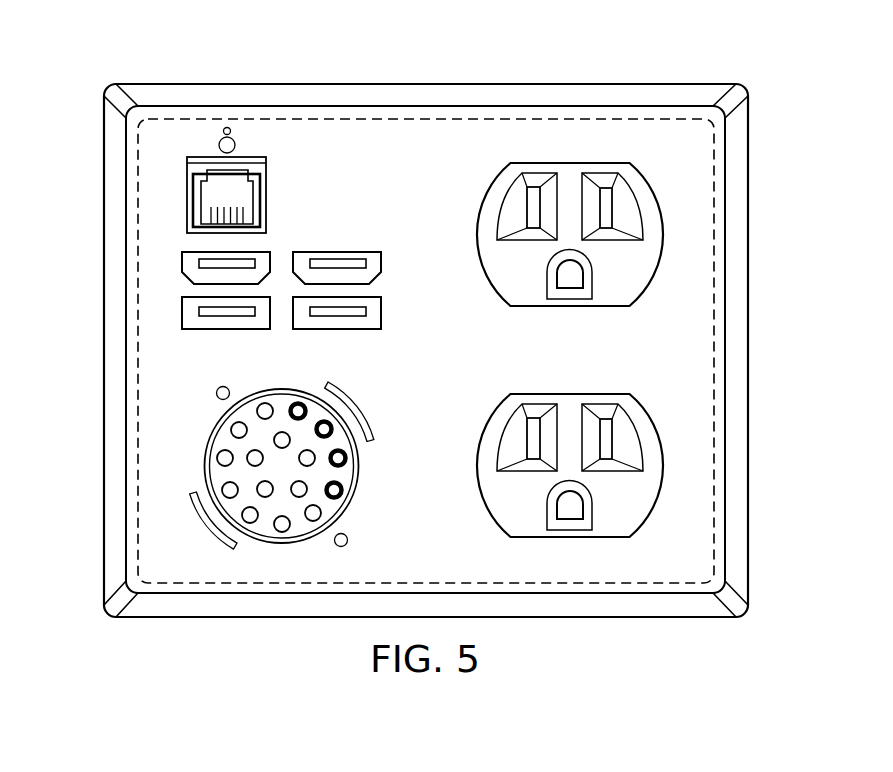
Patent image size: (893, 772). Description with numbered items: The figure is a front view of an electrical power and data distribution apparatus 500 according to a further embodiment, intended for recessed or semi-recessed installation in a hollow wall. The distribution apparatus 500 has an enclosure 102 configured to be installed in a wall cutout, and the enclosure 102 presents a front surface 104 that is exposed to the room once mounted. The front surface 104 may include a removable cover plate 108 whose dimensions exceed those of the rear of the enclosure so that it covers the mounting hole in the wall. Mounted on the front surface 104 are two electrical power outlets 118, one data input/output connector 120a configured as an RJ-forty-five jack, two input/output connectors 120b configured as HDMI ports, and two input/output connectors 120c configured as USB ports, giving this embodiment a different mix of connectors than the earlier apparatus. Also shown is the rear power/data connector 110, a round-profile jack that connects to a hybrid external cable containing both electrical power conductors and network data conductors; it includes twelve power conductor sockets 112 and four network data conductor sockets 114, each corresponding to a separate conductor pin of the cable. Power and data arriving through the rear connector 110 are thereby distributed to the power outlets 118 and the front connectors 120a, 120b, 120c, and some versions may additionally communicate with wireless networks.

The distribution apparatus 500 is at (427, 313).
The enclosure 102 is at (137, 397).
The front surface 104 is at (152, 345).
The cover plate 108 is at (737, 350).
The rear power/data connector 110 is at (298, 442).
The power conductor sockets 112 is at (218, 452).
The network data conductor sockets 114 is at (298, 403).
The electrical power outlets 118 is at (548, 394).
The data input/output connector 120a is at (267, 197).
The input/output connectors 120b is at (270, 260).
The input/output connectors 120c is at (381, 312).